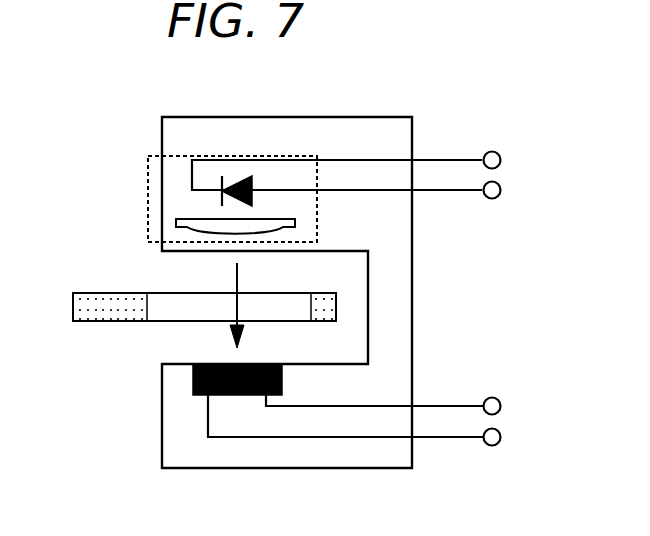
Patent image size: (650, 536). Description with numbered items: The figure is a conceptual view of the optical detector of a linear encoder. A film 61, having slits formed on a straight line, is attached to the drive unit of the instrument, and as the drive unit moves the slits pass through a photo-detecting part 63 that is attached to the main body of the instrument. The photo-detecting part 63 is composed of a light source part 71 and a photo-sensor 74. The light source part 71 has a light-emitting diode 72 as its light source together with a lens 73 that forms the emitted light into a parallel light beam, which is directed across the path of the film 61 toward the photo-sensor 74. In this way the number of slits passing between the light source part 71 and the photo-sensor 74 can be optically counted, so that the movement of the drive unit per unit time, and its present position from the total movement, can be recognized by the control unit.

The film 61 is at (93, 323).
The photo-detecting part 63 is at (412, 247).
The light source part 71 is at (148, 183).
The light-emitting diode 72 is at (238, 176).
The lens 73 is at (173, 225).
The photo-sensor 74 is at (187, 389).